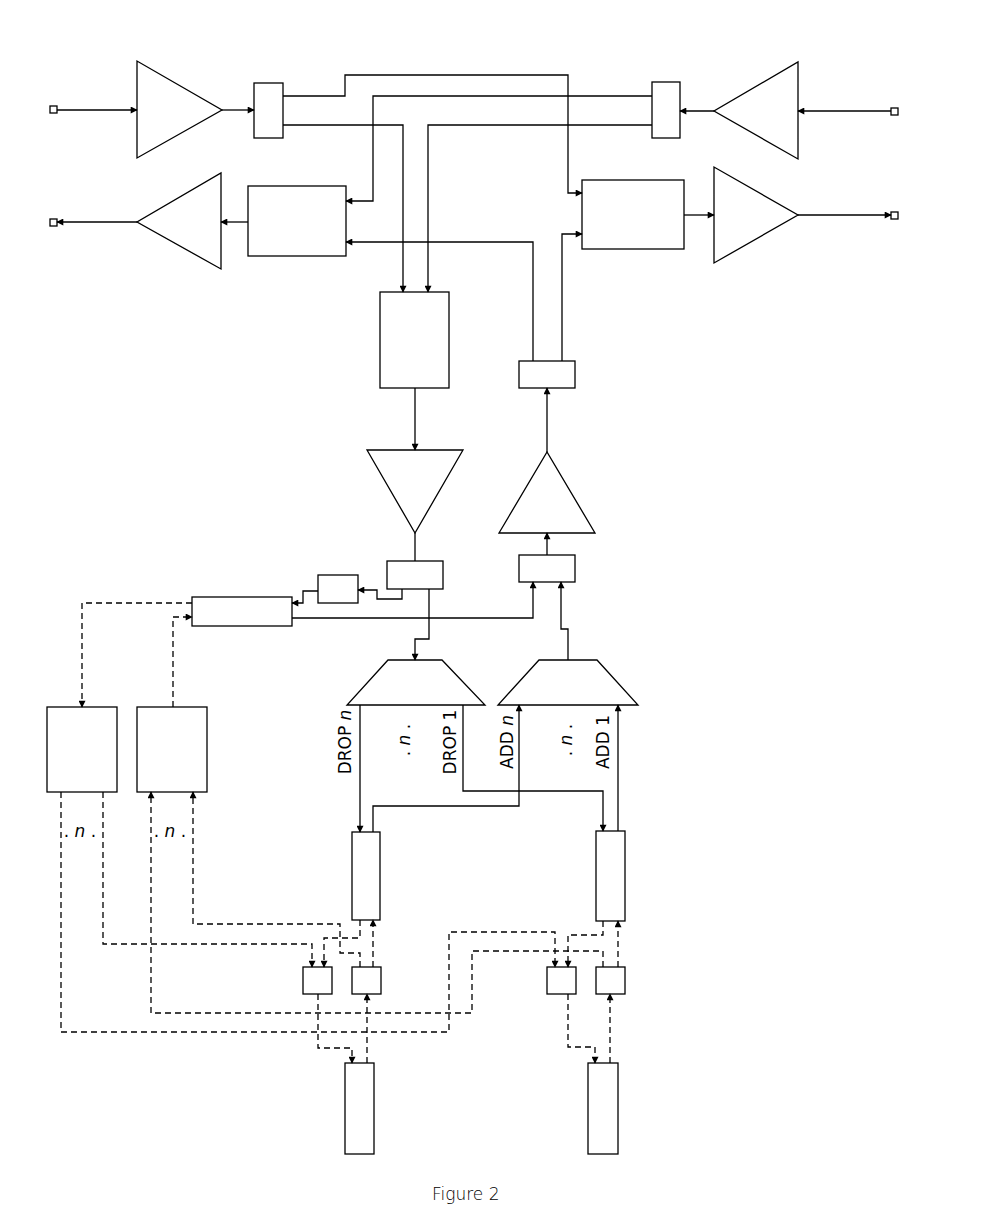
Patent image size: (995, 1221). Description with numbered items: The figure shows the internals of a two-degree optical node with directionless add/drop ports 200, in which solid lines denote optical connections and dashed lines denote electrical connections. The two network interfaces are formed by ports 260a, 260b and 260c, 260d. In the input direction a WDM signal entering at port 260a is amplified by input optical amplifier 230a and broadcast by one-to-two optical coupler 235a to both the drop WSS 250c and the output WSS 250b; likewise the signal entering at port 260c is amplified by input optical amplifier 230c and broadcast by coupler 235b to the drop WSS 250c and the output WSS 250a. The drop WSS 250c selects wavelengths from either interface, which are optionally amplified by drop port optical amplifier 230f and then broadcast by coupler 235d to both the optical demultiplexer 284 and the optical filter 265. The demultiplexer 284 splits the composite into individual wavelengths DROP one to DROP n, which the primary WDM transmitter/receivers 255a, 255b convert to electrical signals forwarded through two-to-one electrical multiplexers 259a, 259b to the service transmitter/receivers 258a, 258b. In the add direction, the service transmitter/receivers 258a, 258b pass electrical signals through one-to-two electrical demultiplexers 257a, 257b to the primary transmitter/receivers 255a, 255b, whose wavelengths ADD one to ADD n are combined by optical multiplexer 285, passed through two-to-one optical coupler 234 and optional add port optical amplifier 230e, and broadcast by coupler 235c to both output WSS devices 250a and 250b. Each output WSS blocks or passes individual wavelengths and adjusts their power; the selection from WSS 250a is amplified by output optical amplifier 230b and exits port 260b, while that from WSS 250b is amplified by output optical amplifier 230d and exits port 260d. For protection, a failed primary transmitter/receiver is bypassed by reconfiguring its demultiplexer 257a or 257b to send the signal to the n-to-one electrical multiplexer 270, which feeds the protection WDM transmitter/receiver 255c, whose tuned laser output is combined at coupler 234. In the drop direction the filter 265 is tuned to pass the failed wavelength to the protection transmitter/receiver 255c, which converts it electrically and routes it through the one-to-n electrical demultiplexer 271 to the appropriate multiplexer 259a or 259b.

The two-degree optical node with directionless add/drop ports 200 is at (97, 27).
The input optical amplifier 230a is at (183, 90).
The output optical amplifier 230b is at (173, 243).
The input optical amplifier 230c is at (799, 97).
The output optical amplifier 230d is at (714, 263).
The add port optical amplifier 230e is at (562, 473).
The drop port optical amplifier 230f is at (455, 456).
The 2-to-1 optical coupler 234 is at (575, 578).
The 1-to-2 optical coupler 235a is at (268, 83).
The 1-to-2 optical coupler 235b is at (667, 82).
The 1-to-2 optical coupler 235c is at (575, 372).
The 1-to-2 optical coupler 235d is at (443, 563).
The output wavelength selective switch 250a is at (297, 221).
The output wavelength selective switch 250b is at (633, 214).
The drop wavelength selective switch 250c is at (414, 340).
The primary WDM transmitter/receiver 255a is at (610, 876).
The primary WDM transmitter/receiver 255b is at (366, 876).
The protection WDM transmitter/receiver 255c is at (242, 611).
The 1-to-2 electrical demultiplexer 257a is at (625, 977).
The 1-to-2 electrical demultiplexer 257b is at (382, 965).
The service transmitter/receiver 258a is at (603, 1108).
The service transmitter/receiver 258b is at (359, 1108).
The 2-to-1 electrical multiplexer 259a is at (547, 978).
The 2-to-1 electrical multiplexer 259b is at (303, 980).
The network interface 260a is at (58, 107).
The network interface 260b is at (58, 219).
The network interface 260c is at (891, 108).
The network interface 260d is at (891, 212).
The optical filter 265 is at (332, 575).
The n-to-1 electrical multiplexer 270 is at (172, 749).
The 1-to-n electrical demultiplexer 271 is at (82, 749).
The optical demultiplexer 284 is at (416, 682).
The optical multiplexer 285 is at (568, 682).